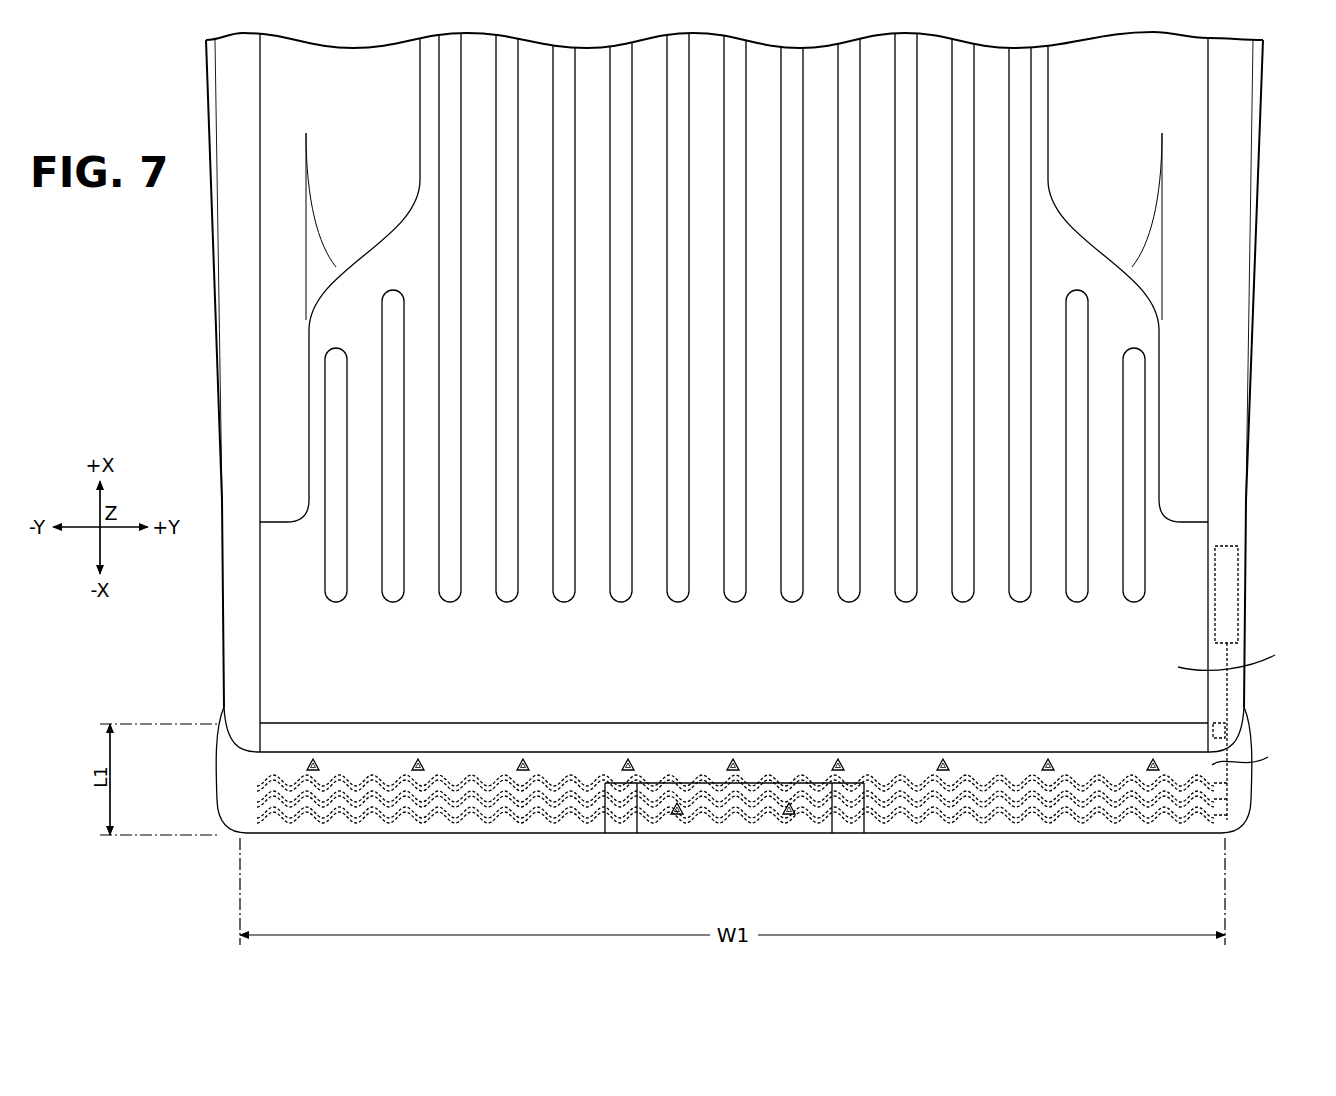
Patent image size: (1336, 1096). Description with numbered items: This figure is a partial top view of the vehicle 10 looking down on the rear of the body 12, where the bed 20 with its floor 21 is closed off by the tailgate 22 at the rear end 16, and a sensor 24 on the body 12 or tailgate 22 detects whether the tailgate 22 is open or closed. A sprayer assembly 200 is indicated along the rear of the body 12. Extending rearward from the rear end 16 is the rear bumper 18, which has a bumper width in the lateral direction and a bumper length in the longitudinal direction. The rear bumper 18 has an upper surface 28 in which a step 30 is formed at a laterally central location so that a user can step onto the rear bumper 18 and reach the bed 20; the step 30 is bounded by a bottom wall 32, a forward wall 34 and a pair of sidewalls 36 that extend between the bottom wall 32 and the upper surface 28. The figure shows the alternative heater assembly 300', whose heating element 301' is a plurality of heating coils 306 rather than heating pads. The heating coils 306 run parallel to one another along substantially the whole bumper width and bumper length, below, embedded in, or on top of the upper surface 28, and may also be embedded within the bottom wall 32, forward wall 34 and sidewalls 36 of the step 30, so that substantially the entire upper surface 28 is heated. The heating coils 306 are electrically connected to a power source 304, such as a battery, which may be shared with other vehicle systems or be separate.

The vehicle 10 is at (1272, 395).
The body 12 is at (1268, 482).
The rear end 16 is at (237, 752).
The rear bumper 18 is at (1040, 835).
The bed 20 is at (288, 651).
The floor 21 is at (1239, 656).
The tailgate 22 is at (1082, 735).
The sensor 24 is at (1232, 730).
The upper surface 28 is at (1255, 750).
The step 30 is at (662, 837).
The bottom wall 32 is at (697, 825).
The forward wall 34 is at (737, 785).
The sidewalls 36 is at (620, 825).
The sprayer assembly 200 is at (523, 752).
The heater assembly 300' is at (436, 859).
The heating element 301' is at (916, 871).
The power source 304 is at (1240, 613).
The heating coils 306 is at (537, 810).